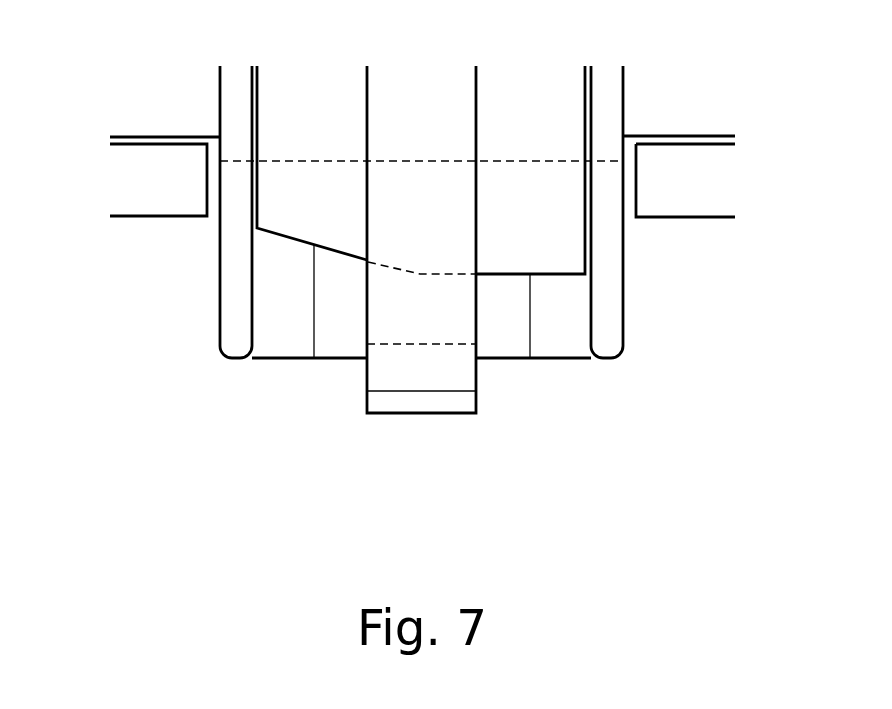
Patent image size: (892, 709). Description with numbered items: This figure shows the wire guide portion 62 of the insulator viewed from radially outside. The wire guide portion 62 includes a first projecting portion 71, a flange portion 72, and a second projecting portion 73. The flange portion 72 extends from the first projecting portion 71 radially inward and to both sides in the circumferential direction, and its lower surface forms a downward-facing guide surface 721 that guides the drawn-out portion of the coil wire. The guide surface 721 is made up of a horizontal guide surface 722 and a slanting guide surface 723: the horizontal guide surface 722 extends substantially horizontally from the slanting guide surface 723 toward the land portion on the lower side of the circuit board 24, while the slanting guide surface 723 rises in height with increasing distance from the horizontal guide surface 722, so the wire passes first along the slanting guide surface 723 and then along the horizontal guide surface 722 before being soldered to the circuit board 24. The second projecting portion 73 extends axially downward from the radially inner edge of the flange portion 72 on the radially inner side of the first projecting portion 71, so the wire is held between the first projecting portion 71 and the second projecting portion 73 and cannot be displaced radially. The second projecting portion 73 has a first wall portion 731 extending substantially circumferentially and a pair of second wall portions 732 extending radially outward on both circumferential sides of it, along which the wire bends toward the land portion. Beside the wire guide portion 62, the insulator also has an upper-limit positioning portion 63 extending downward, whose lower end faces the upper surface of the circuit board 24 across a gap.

The circuit board 24 is at (159, 197).
The wire guide portion 62 is at (637, 317).
The upper-limit positioning portion 63 is at (678, 119).
The first projecting portion 71 is at (423, 380).
The flange portion 72 is at (530, 215).
The guide surface 721 is at (465, 352).
The horizontal guide surface 722 is at (547, 274).
The slanting guide surface 723 is at (340, 255).
The second projecting portion 73 is at (302, 370).
The first wall portion 731 is at (340, 327).
The second wall portions 732 is at (282, 327).